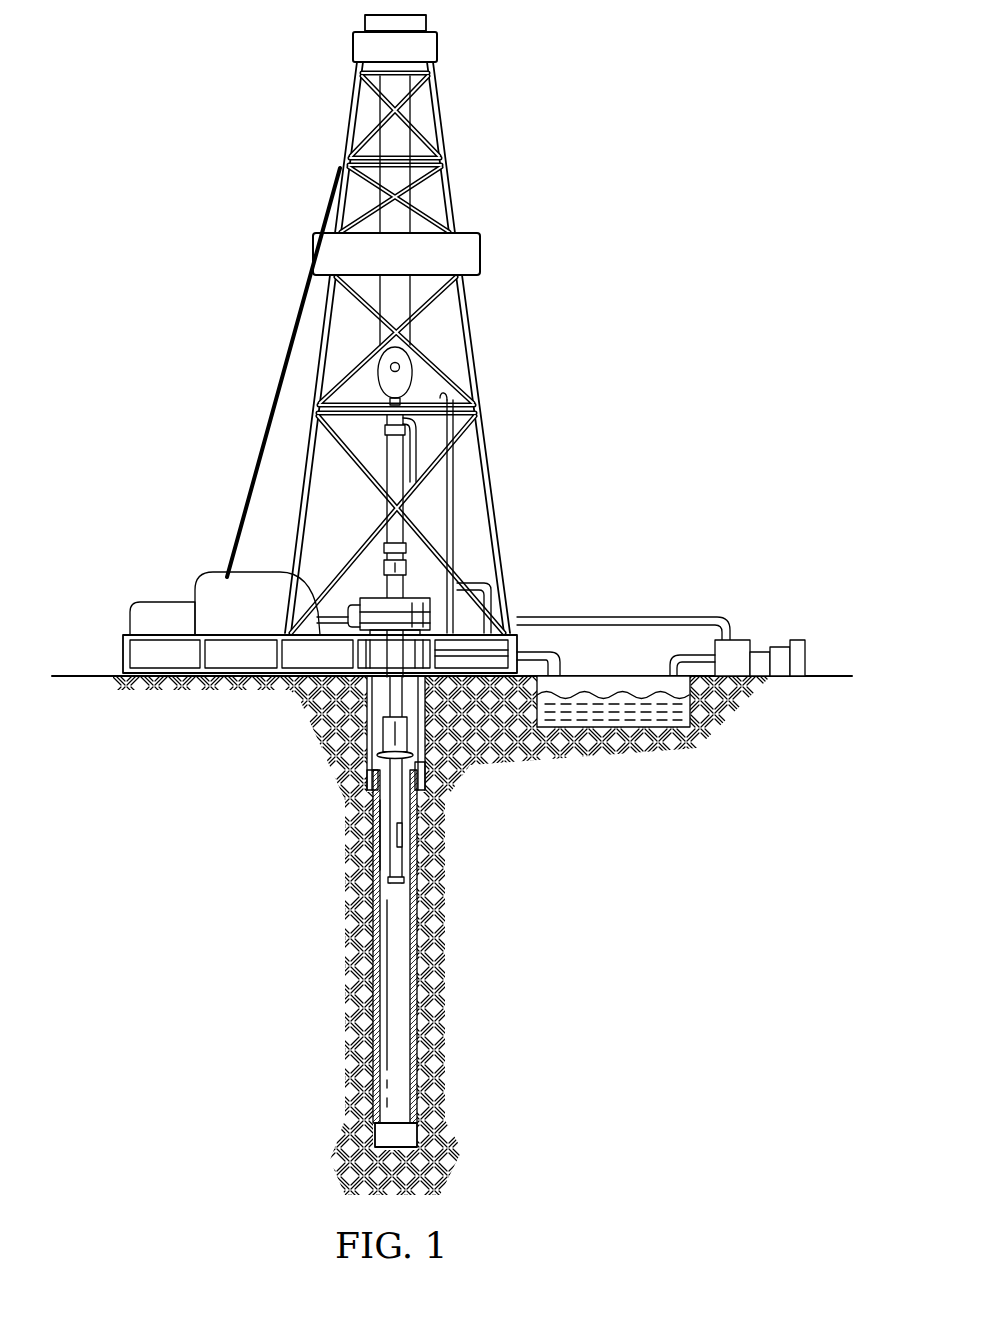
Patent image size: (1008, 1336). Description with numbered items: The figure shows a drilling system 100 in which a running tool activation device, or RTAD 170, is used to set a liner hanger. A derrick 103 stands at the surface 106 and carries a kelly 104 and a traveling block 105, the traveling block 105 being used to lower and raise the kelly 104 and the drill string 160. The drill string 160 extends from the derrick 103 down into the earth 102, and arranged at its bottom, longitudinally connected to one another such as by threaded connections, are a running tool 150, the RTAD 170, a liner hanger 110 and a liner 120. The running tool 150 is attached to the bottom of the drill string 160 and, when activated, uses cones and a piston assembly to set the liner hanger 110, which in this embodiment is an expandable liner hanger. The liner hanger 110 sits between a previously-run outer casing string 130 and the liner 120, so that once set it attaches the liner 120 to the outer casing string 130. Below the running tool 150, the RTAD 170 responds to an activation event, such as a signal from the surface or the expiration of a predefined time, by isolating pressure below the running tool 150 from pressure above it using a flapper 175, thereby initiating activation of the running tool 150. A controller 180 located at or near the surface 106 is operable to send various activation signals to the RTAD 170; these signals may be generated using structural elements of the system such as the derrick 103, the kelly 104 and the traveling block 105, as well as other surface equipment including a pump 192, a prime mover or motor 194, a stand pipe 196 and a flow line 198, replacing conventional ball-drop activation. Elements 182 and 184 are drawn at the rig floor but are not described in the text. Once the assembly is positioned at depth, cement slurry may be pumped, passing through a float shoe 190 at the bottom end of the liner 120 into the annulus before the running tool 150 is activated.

The drilling system 100 is at (265, 128).
The earth 102 is at (668, 885).
The derrick 103 is at (455, 194).
The kelly 104 is at (390, 460).
The traveling block 105 is at (380, 390).
The surface 106 is at (78, 676).
The liner hanger 110 is at (424, 757).
The liner 120 is at (436, 1006).
The outer casing string 130 is at (352, 765).
The running tool 150 is at (368, 741).
The drill string 160 is at (372, 696).
The running tool activation device 170 is at (378, 828).
The flapper 175 is at (403, 833).
The controller 180 is at (278, 695).
The mud tank 182 is at (160, 645).
The mud tank 184 is at (238, 645).
The float shoe 190 is at (408, 1137).
The pump 192 is at (736, 640).
The motor 194 is at (806, 658).
The stand pipe 196 is at (456, 500).
The flow line 198 is at (558, 666).